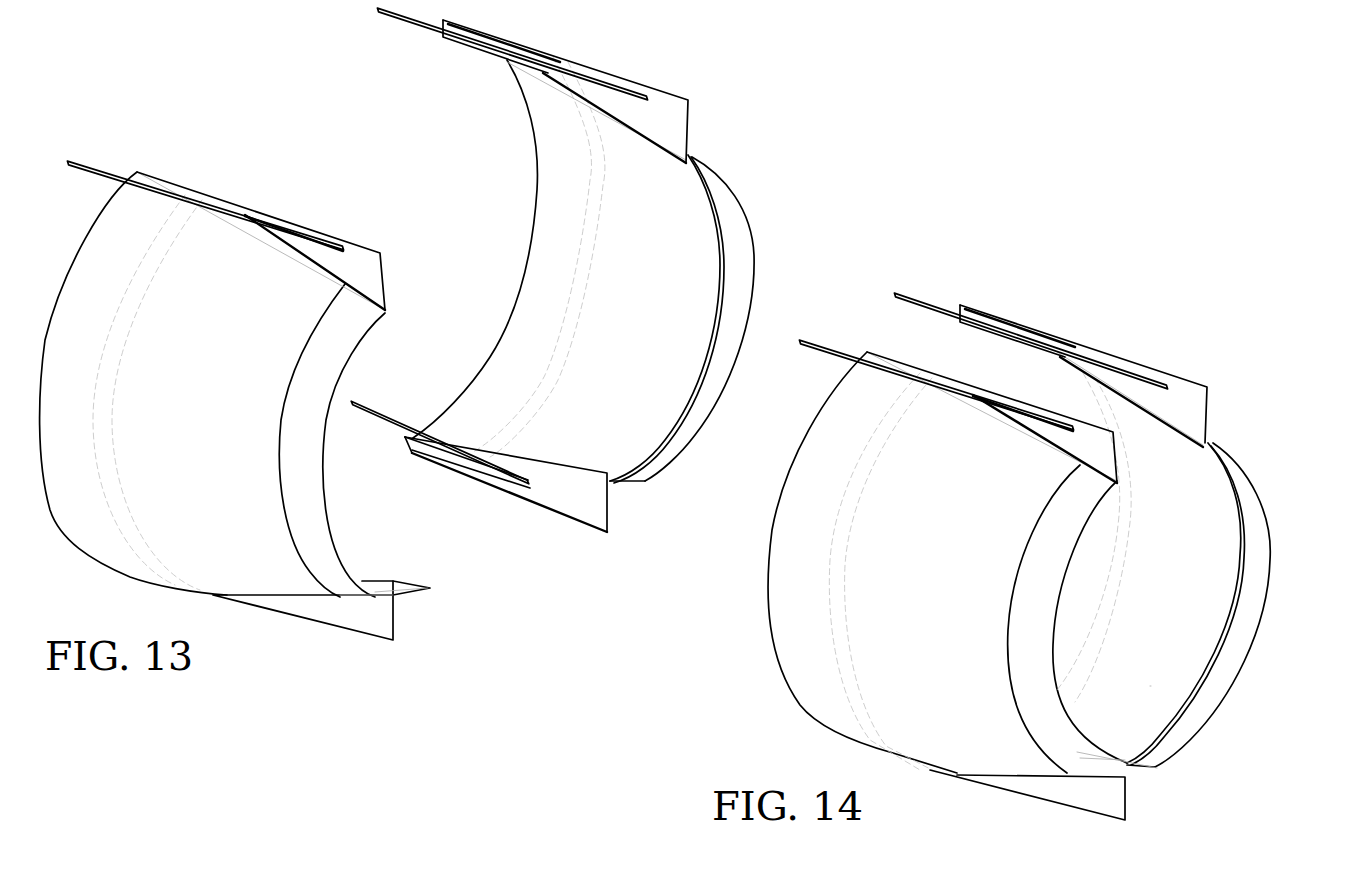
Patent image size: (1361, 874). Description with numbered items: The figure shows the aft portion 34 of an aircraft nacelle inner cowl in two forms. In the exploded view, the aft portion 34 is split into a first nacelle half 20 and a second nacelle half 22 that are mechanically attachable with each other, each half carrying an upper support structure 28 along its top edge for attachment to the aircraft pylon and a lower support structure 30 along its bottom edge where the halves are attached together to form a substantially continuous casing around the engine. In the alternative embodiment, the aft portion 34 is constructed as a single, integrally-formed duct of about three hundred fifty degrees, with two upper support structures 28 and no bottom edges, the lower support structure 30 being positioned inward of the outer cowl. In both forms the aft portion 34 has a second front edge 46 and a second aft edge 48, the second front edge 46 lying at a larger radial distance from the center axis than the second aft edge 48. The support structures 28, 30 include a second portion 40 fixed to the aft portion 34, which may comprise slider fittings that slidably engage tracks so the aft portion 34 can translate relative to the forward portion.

In FIG. 13, the first nacelle half 20 is at (145, 200).
In FIG. 13, the second nacelle half 22 is at (609, 270).
In FIG. 13, the upper support structure 28 is at (377, 159).
In FIG. 14, the upper support structure 28 is at (1003, 388).
In FIG. 13, the lower support structure 30 is at (352, 612).
In FIG. 14, the lower support structure 30 is at (1107, 793).
In FIG. 13, the aft portion 34 is at (642, 533).
In FIG. 14, the aft portion 34 is at (1150, 683).
In FIG. 13, the second portion 40 is at (365, 263).
In FIG. 14, the second portion 40 is at (1193, 395).
In FIG. 13, the second front edge 46 is at (537, 175).
In FIG. 14, the second front edge 46 is at (768, 588).
In FIG. 14, the second aft edge 48 is at (1253, 647).